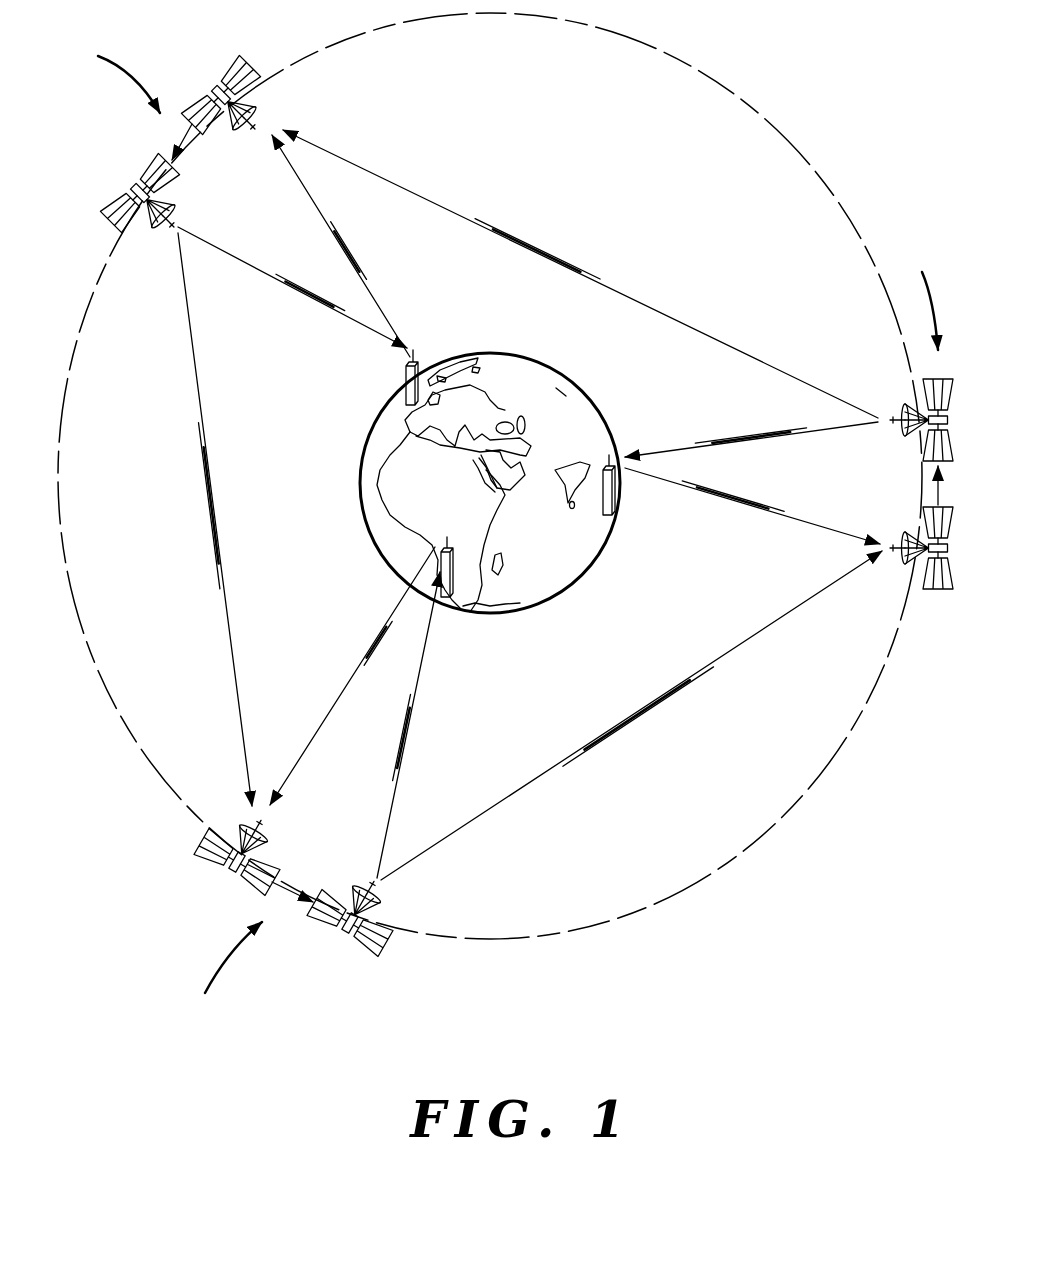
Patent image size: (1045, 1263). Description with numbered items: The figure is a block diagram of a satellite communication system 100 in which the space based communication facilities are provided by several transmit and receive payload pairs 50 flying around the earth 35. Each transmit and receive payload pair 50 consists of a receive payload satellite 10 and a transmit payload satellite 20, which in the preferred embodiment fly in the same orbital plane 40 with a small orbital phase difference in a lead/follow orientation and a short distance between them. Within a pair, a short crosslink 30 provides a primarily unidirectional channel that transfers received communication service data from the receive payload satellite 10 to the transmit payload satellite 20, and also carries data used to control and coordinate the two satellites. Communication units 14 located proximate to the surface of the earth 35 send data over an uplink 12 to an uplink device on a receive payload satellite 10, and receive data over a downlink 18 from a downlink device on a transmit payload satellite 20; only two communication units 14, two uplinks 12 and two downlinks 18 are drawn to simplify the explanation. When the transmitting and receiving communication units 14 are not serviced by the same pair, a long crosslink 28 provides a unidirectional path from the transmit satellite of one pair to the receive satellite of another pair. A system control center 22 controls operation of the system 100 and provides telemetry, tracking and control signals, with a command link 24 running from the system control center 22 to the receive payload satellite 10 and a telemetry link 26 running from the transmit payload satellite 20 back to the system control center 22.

The satellite communication system 100 is at (582, 1039).
The receive payload satellite 10 is at (246, 66).
The transmit payload satellite 20 is at (115, 212).
The short crosslink 30 is at (185, 143).
The transmit and receive payload pair 50 is at (498, 528).
The orbital plane 40 is at (683, 889).
The earth 35 is at (585, 397).
The system control center 22 is at (403, 372).
The communication unit 14 is at (620, 510).
The command link 24 is at (328, 214).
The telemetry link 26 is at (269, 281).
The long crosslink 28 is at (197, 386).
The uplink 12 is at (338, 698).
The downlink 18 is at (417, 755).